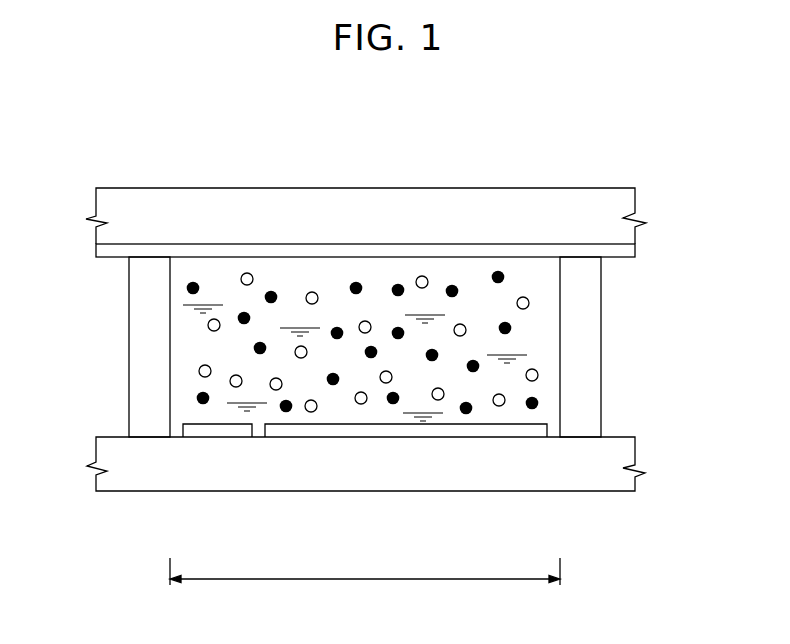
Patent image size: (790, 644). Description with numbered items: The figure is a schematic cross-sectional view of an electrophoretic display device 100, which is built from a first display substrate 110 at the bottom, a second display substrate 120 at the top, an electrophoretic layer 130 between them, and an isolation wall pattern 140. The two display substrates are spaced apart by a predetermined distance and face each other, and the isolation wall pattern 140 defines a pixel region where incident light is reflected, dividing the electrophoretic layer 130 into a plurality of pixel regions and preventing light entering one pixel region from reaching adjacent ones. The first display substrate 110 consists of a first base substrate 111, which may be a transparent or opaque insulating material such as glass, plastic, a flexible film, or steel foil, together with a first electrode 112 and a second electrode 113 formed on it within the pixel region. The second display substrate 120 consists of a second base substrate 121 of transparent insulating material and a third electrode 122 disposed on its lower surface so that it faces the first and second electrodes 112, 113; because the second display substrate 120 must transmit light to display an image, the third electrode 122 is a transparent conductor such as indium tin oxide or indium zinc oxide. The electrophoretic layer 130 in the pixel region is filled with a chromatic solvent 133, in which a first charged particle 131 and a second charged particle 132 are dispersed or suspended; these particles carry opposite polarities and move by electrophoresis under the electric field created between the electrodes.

The electrophoretic display device 100 is at (352, 96).
The first display substrate 110 is at (75, 425).
The first base substrate 111 is at (632, 480).
The first electrode 112 is at (222, 432).
The second electrode 113 is at (433, 432).
The second display substrate 120 is at (75, 192).
The second base substrate 121 is at (632, 203).
The third electrode 122 is at (366, 252).
The electrophoretic layer 130 is at (75, 420).
The first charged particle 131 is at (511, 328).
The second charged particle 132 is at (529, 302).
The chromatic solvent 133 is at (545, 380).
The isolation wall pattern 140 is at (149, 432).